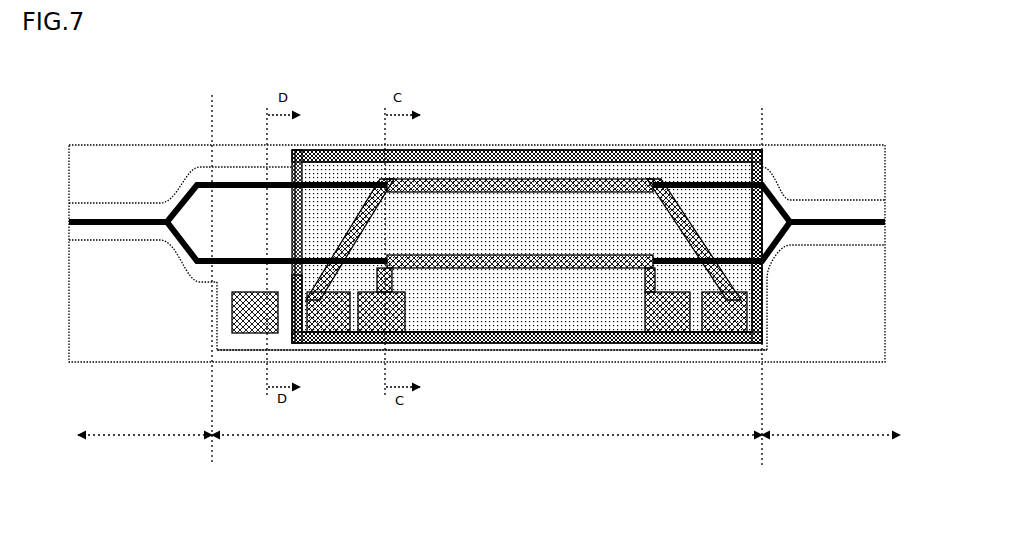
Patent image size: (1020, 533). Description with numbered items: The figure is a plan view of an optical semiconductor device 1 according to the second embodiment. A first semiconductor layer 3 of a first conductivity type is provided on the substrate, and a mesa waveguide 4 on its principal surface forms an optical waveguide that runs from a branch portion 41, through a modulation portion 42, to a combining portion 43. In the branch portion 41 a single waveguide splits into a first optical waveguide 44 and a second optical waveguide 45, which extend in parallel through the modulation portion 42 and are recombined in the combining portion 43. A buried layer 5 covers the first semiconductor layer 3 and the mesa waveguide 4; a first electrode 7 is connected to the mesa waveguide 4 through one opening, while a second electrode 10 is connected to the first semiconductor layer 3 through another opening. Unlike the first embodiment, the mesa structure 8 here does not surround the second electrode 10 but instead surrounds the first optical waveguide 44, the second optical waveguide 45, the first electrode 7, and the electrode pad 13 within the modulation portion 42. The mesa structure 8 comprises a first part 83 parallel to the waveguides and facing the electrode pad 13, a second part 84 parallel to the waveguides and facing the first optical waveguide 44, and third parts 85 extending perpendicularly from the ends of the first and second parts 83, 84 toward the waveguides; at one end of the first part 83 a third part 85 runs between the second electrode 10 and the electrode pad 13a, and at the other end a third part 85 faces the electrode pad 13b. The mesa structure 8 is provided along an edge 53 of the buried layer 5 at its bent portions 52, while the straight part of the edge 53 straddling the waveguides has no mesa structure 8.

The optical semiconductor device 1 is at (812, 100).
The first semiconductor layer 3 is at (820, 200).
The mesa waveguide 4 is at (118, 212).
The buried layer 5 is at (615, 340).
The first electrode 7 is at (510, 178).
The mesa structure 8 is at (470, 347).
The second electrode 10 is at (262, 336).
The electrode pad 13 is at (667, 320).
The electrode pad 13a is at (332, 313).
The electrode pad 13b is at (727, 320).
The branch portion 41 is at (150, 440).
The modulation portion 42 is at (500, 440).
The combining portion 43 is at (838, 440).
The first optical waveguide 44 is at (677, 187).
The second optical waveguide 45 is at (700, 250).
The bent portion 52 is at (303, 152).
The edge 53 is at (293, 228).
The first part 83 is at (555, 345).
The second part 84 is at (608, 150).
The third part 85 is at (765, 305).